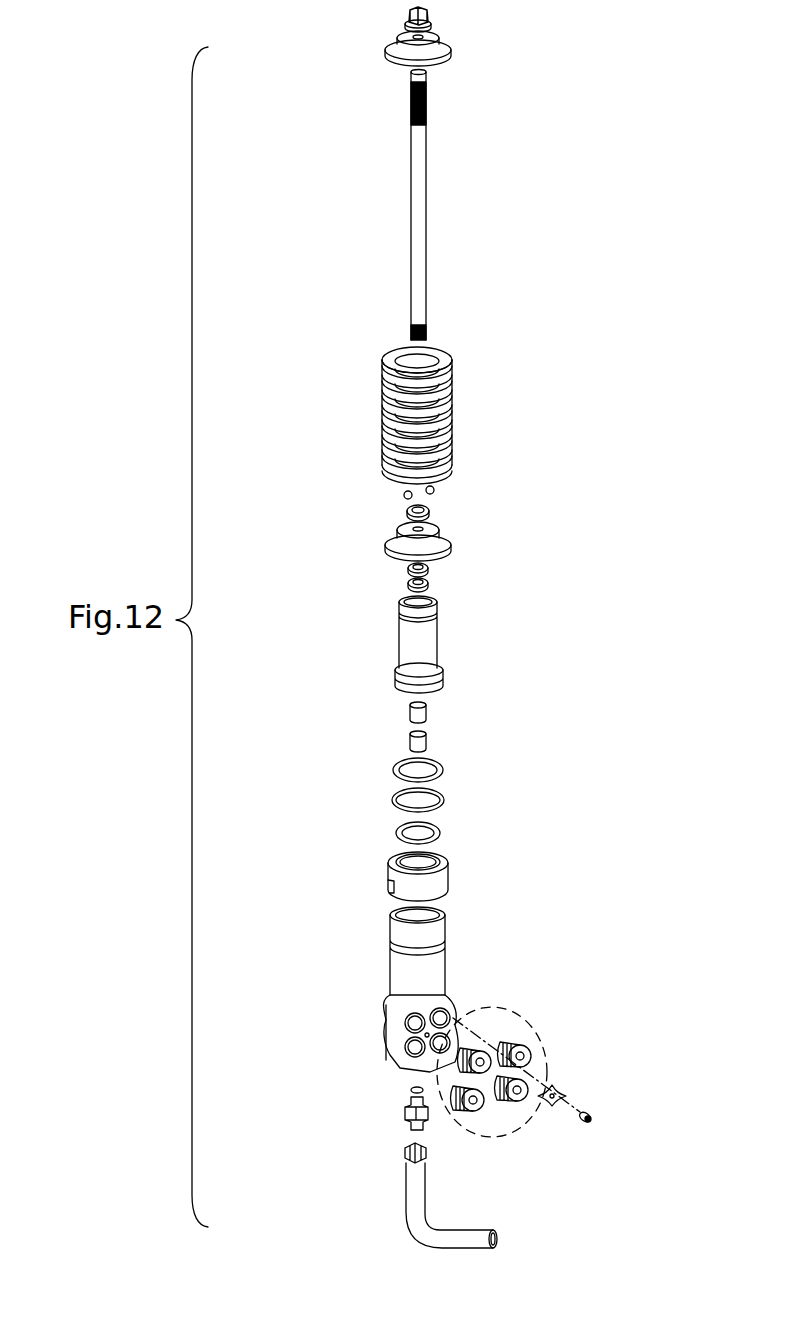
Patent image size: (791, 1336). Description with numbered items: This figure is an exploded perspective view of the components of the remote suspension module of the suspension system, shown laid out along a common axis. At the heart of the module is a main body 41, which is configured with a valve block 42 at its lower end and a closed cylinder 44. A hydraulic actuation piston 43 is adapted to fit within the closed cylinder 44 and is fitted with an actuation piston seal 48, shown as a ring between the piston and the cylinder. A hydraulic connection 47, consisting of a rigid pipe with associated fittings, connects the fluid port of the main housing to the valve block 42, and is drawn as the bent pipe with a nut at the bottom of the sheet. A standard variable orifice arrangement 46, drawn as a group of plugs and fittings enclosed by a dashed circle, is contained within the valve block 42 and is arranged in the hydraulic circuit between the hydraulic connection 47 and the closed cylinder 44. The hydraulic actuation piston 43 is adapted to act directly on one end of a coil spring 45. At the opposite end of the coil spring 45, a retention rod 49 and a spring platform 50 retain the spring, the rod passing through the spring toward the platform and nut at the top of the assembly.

The spring platform 50 is at (436, 47).
The retention rod 49 is at (418, 203).
The coil spring 45 is at (450, 425).
The hydraulic actuation piston 43 is at (430, 642).
The actuation piston seal 48 is at (441, 771).
The closed cylinder 44 is at (412, 922).
The main body 41 is at (437, 969).
The valve block 42 is at (385, 1044).
The variable orifice arrangement 46 is at (545, 1020).
The hydraulic connection 47 is at (416, 1198).